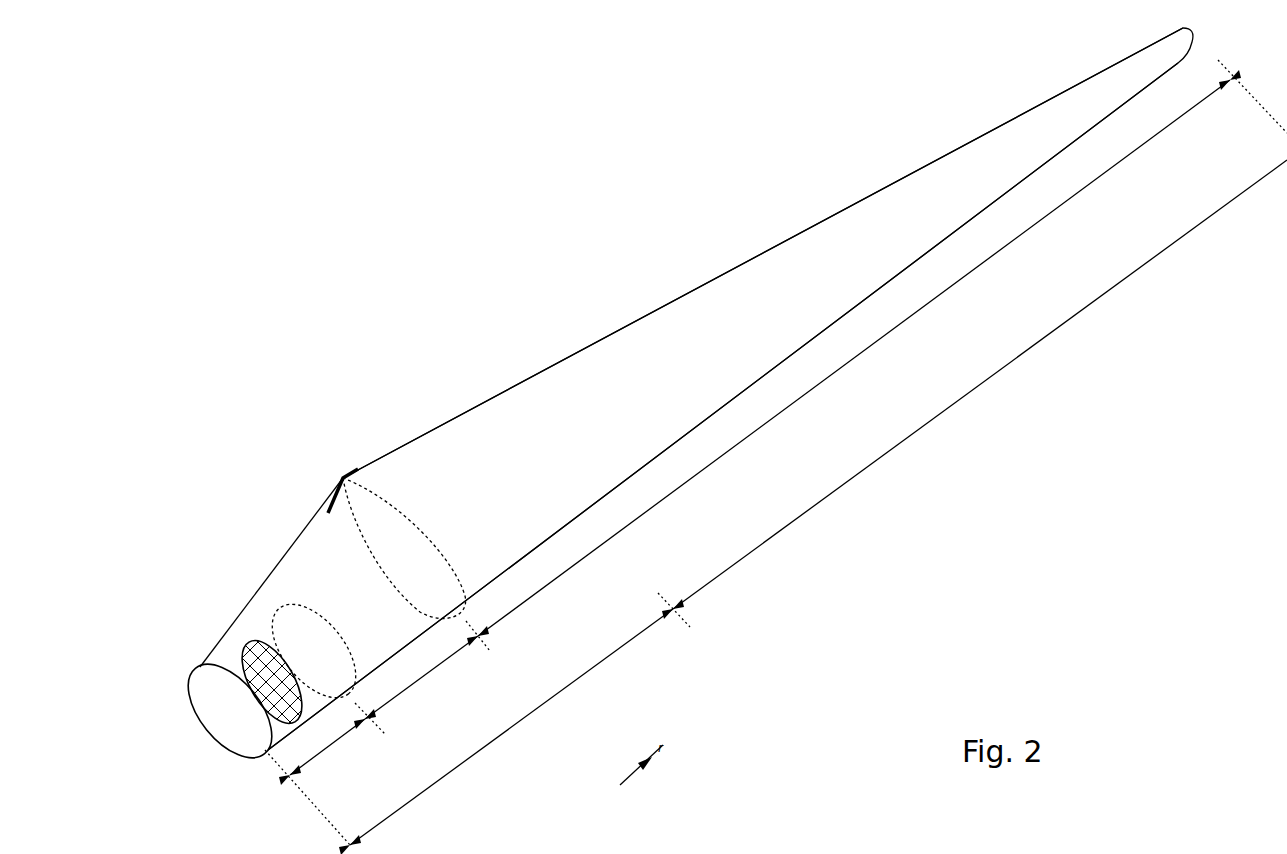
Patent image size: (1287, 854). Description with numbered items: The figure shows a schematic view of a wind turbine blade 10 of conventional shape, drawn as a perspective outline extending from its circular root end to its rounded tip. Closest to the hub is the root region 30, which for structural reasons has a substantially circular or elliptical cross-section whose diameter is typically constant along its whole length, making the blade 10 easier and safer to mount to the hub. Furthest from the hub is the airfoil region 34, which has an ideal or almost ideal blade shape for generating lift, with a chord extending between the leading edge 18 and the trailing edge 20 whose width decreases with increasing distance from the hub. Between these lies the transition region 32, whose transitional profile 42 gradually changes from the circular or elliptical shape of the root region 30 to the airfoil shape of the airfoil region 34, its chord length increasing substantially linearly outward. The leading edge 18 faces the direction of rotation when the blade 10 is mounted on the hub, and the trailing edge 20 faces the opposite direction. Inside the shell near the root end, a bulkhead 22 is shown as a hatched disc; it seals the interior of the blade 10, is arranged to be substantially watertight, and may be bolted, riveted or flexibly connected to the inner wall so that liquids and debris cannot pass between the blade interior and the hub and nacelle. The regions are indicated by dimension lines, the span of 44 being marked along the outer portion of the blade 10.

The wind turbine blade 10 is at (511, 255).
The leading edge 18 is at (890, 288).
The trailing edge 20 is at (896, 178).
The bulkhead 22 is at (270, 663).
The root region 30 is at (335, 742).
The transition region 32 is at (425, 674).
The airfoil region 34 is at (780, 410).
The transitional profile 42 is at (545, 702).
The outboard region 44 is at (815, 507).